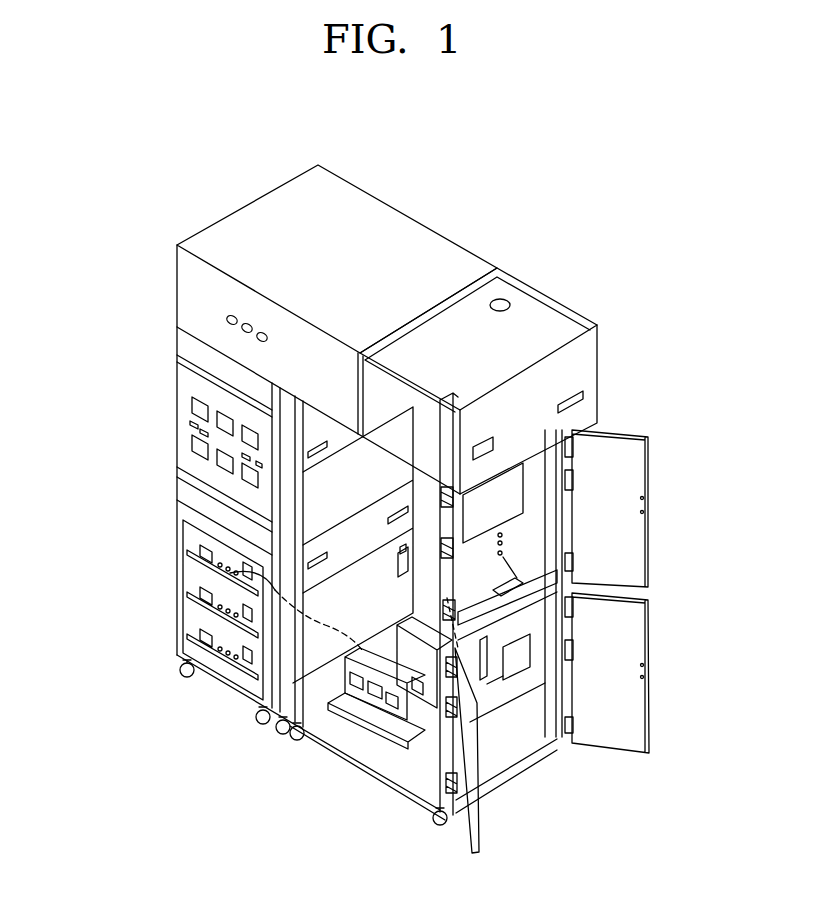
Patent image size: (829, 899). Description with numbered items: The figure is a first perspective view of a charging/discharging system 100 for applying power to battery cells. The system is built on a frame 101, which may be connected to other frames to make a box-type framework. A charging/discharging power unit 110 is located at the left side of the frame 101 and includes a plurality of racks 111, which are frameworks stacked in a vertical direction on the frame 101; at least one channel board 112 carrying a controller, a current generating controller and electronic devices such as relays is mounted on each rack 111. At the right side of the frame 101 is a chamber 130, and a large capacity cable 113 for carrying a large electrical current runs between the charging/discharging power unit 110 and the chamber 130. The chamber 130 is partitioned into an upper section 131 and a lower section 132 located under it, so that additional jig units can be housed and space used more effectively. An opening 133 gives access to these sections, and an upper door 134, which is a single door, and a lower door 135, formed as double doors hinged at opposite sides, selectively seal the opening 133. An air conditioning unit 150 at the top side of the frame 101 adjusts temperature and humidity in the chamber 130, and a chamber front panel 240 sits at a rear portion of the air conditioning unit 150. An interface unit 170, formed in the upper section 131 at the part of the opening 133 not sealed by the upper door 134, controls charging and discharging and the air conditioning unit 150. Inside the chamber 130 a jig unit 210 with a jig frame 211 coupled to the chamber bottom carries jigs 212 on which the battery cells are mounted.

The charging/discharging system 100 is at (118, 177).
The frame 101 is at (283, 716).
The charging/discharging power unit 110 is at (150, 452).
The racks 111 is at (178, 630).
The channel board 112 is at (185, 560).
The large capacity cable 113 is at (245, 668).
The chamber 130 is at (402, 798).
The upper section 131 is at (528, 538).
The lower section 132 is at (528, 632).
The opening 133 is at (505, 748).
The upper door 134 is at (638, 466).
The lower door 135 is at (640, 712).
The air conditioning unit 150 is at (566, 286).
The interface unit 170 is at (570, 573).
The jig unit 210 is at (360, 730).
The jig frame 211 is at (380, 742).
The jigs 212 is at (305, 750).
The chamber front panel 240 is at (385, 220).